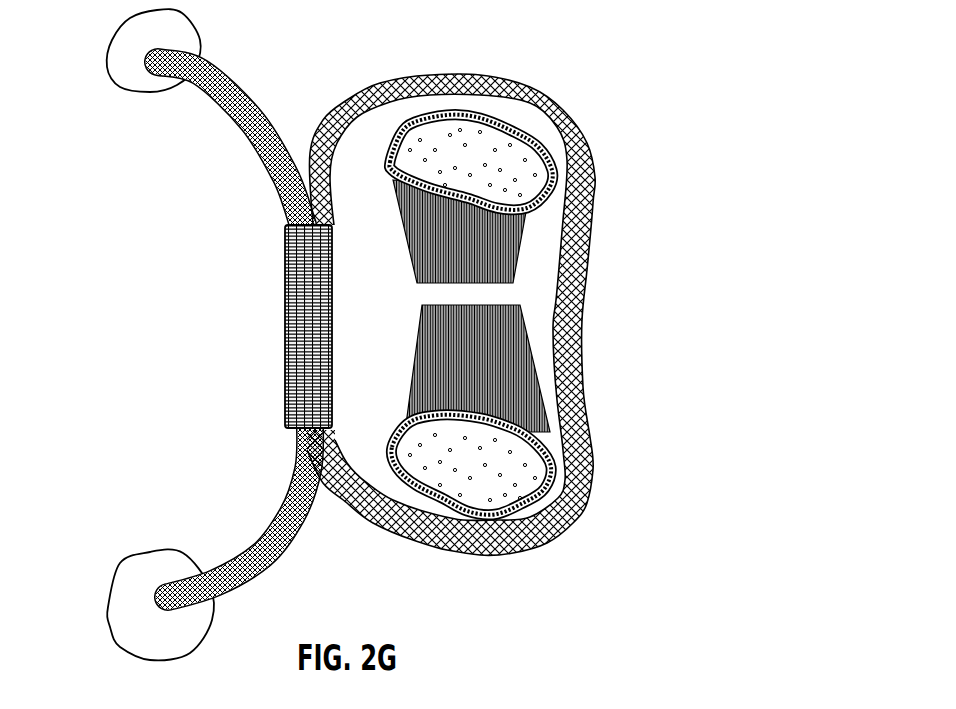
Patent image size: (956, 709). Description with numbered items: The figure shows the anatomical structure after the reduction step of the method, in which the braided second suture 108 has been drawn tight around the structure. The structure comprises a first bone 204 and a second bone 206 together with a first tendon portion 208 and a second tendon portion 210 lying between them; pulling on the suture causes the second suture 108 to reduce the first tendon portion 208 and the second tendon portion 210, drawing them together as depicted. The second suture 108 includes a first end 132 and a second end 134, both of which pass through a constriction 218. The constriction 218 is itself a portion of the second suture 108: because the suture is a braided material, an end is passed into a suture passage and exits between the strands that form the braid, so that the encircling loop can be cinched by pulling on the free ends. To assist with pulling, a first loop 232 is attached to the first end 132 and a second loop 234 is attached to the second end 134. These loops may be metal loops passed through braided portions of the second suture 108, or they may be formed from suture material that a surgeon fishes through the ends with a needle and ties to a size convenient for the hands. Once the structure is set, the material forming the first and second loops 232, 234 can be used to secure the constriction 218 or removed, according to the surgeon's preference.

The second suture 108 is at (585, 294).
The first end 132 is at (242, 122).
The second end 134 is at (270, 528).
The first bone 204 is at (577, 185).
The second bone 206 is at (582, 516).
The first tendon portion 208 is at (400, 249).
The second tendon portion 210 is at (423, 335).
The constriction 218 is at (288, 313).
The first loop 232 is at (124, 90).
The second loop 234 is at (128, 556).